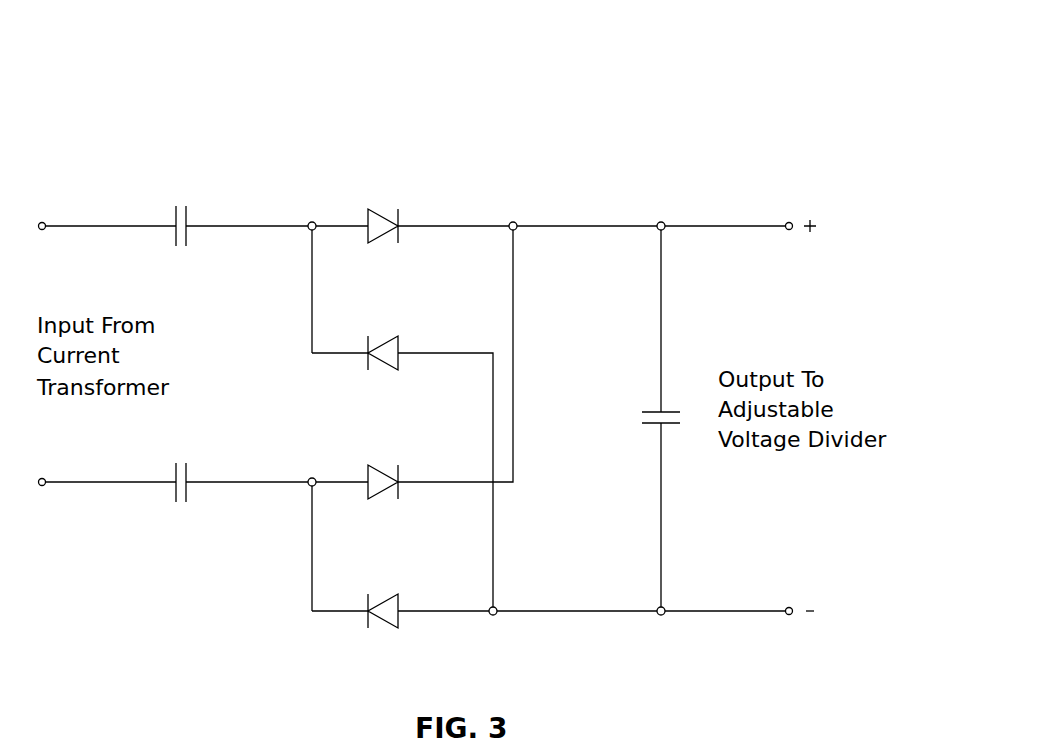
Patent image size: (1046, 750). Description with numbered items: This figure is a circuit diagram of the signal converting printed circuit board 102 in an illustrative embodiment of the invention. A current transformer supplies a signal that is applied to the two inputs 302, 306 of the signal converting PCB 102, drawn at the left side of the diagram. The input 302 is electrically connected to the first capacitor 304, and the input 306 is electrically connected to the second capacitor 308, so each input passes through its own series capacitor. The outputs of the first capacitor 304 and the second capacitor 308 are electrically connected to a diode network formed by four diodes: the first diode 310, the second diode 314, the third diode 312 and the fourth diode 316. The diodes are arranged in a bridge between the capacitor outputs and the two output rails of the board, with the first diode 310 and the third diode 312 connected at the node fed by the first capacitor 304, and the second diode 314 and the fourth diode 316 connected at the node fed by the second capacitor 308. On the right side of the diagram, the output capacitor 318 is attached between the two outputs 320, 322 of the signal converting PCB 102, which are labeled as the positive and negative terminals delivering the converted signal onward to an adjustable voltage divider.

The signal converting printed circuit board 102 is at (647, 112).
The input 302 is at (97, 226).
The capacitor C1 304 is at (187, 236).
The input 306 is at (118, 483).
The capacitor C2 308 is at (187, 492).
The diode D1 310 is at (368, 215).
The diode D3 312 is at (400, 348).
The diode D2 314 is at (368, 473).
The diode D4 316 is at (400, 618).
The capacitor 318 is at (666, 426).
The output 320 is at (725, 226).
The output 322 is at (725, 611).